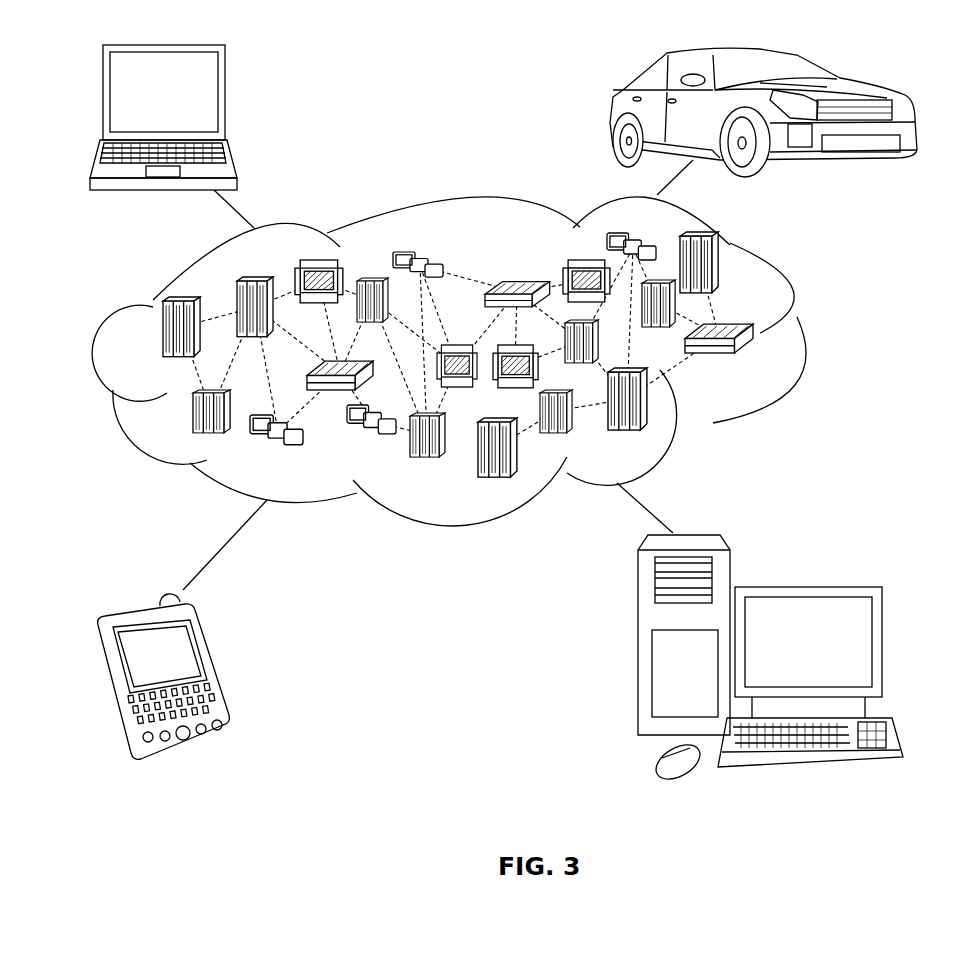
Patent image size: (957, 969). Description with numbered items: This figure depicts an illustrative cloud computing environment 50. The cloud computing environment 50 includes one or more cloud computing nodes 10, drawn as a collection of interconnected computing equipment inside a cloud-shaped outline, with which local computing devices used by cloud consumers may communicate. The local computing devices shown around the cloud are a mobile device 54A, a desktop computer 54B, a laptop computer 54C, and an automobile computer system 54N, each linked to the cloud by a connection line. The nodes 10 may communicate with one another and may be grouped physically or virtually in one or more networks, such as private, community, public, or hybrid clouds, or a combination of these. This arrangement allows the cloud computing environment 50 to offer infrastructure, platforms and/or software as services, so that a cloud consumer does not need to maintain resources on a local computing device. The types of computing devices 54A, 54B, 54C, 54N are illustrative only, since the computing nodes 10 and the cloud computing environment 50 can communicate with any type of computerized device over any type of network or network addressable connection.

The cloud computing node 10 is at (760, 366).
The cloud computing environment 50 is at (808, 334).
The mobile device 54A is at (219, 665).
The desktop computer 54B is at (805, 586).
The laptop computer 54C is at (226, 101).
The automobile computer system 54N is at (612, 111).